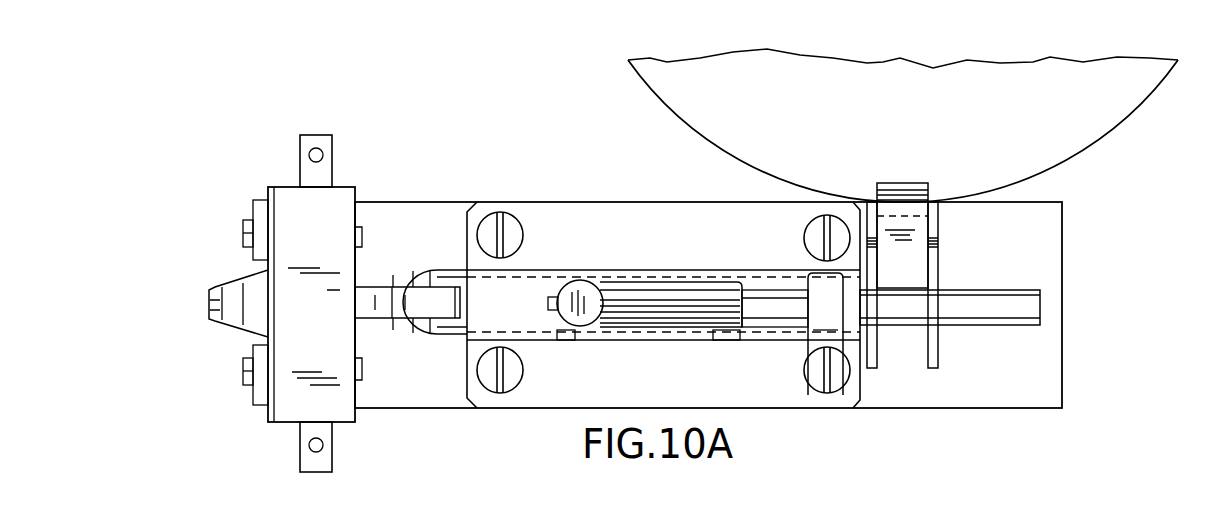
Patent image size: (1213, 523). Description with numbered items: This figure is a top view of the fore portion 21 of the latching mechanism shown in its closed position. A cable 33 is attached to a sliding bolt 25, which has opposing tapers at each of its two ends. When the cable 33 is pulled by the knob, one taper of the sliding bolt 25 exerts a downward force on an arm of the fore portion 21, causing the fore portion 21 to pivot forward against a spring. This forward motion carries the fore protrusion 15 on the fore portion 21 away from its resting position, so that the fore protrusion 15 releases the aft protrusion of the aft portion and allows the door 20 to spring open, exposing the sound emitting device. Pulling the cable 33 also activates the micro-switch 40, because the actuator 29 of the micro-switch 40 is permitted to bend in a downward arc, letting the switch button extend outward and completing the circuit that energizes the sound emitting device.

The micro-switch 40 is at (357, 193).
The actuator 29 is at (423, 302).
The sliding bolt 25 is at (441, 273).
The cable 33 is at (1005, 327).
The fore portion 21 is at (923, 210).
The fore protrusion 15 is at (905, 192).
The door 20 is at (1083, 135).